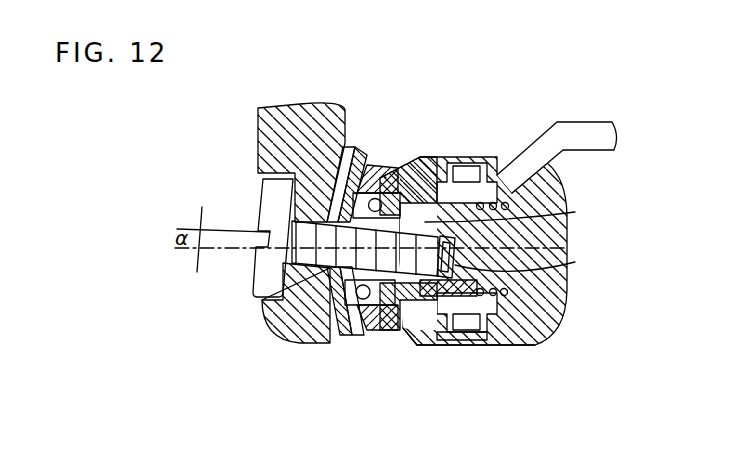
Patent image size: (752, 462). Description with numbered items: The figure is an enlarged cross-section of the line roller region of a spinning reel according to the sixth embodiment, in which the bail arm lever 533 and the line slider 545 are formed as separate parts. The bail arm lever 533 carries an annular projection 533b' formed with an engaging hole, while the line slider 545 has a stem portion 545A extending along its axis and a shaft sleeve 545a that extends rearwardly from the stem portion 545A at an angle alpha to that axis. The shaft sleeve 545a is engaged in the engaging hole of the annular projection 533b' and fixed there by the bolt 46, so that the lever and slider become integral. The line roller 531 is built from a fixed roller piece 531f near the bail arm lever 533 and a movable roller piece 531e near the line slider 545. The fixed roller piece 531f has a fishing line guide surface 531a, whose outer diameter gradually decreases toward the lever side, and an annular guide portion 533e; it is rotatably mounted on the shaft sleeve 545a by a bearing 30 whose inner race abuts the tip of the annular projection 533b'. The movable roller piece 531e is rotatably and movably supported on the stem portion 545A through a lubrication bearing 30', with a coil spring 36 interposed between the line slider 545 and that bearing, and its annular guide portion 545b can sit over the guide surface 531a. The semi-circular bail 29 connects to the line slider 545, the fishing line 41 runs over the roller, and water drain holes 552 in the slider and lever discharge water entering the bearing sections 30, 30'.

The bail 29 is at (568, 136).
The bearing 30 is at (372, 197).
The lubrication bearing 30' is at (483, 220).
The coil spring 36 is at (504, 346).
The fishing line 41 is at (373, 178).
The bolt 46 is at (260, 286).
The line roller 531 is at (418, 150).
The fishing line guide surface 531a is at (355, 332).
The movable roller piece 531e is at (399, 332).
The fixed roller piece 531f is at (345, 340).
The bail arm lever 533 is at (292, 112).
The annular projection 533b' is at (257, 304).
The annular guide portion 533e is at (358, 330).
The line slider 545 is at (512, 211).
The shaft sleeve 545a is at (565, 214).
The stem portion 545A is at (566, 266).
The annular guide portion 545b is at (376, 330).
The water drain holes 552 is at (337, 340).